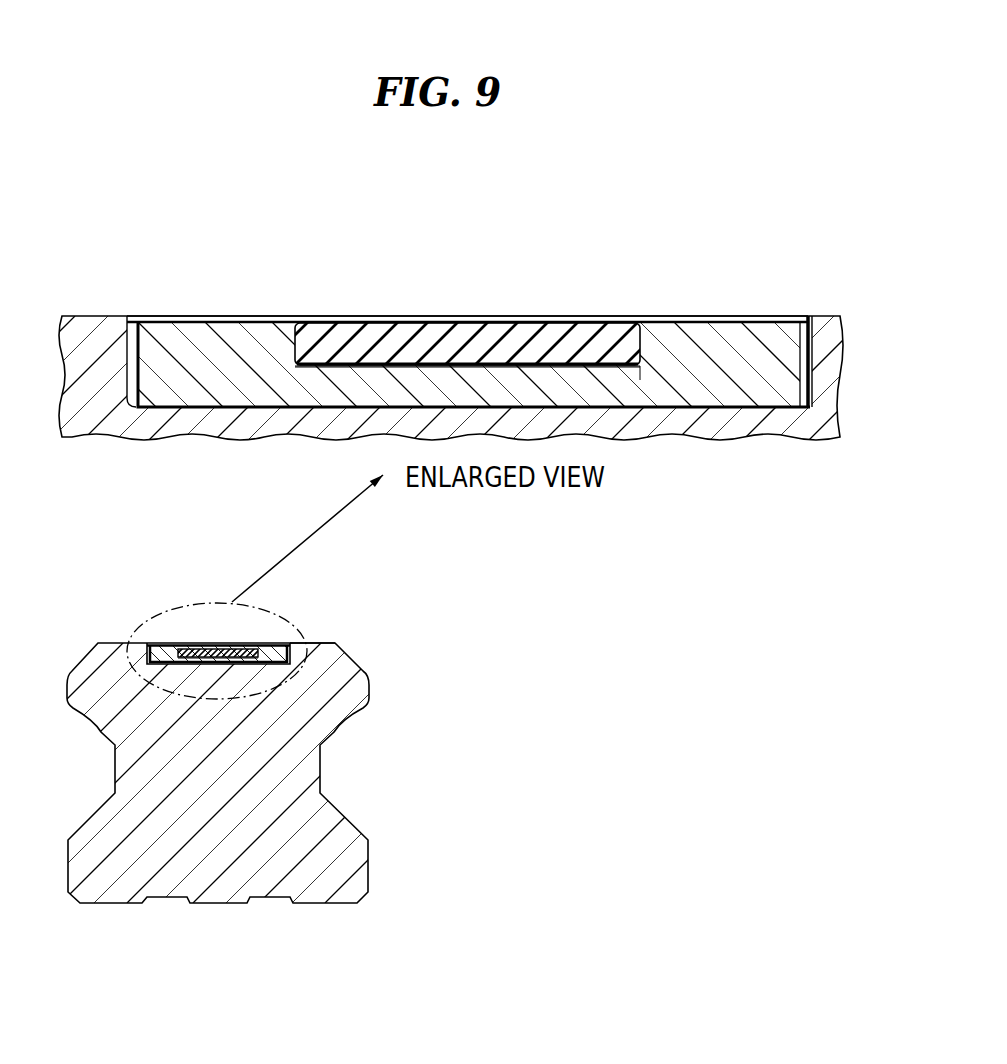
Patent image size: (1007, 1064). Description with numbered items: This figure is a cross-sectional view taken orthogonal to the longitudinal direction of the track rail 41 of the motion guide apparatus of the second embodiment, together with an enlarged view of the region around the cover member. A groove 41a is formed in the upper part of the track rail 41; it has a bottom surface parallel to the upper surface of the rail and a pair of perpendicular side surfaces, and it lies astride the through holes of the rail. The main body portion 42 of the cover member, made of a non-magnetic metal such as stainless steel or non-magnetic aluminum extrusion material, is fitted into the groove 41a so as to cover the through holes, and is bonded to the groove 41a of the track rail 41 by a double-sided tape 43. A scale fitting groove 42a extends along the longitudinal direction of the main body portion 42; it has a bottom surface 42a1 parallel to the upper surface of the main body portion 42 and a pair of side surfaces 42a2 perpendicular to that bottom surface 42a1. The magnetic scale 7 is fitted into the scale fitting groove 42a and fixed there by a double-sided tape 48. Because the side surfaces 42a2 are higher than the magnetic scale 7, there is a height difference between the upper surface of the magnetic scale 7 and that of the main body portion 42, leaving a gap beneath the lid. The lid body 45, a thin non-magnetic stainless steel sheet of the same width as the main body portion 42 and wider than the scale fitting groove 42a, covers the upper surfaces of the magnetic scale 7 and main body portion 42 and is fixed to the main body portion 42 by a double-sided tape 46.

The magnetic scale 7 is at (453, 342).
The track rail 41 is at (798, 427).
The groove 41a is at (305, 643).
The main body portion 42 is at (712, 342).
The scale fitting groove 42a is at (713, 217).
The bottom surface 42a1 is at (578, 362).
The side surfaces 42a2 is at (627, 352).
The double-sided tape 43 is at (704, 410).
The lid body 45 is at (374, 316).
The double-sided tape 46 is at (757, 316).
The double-sided tape 48 is at (517, 362).